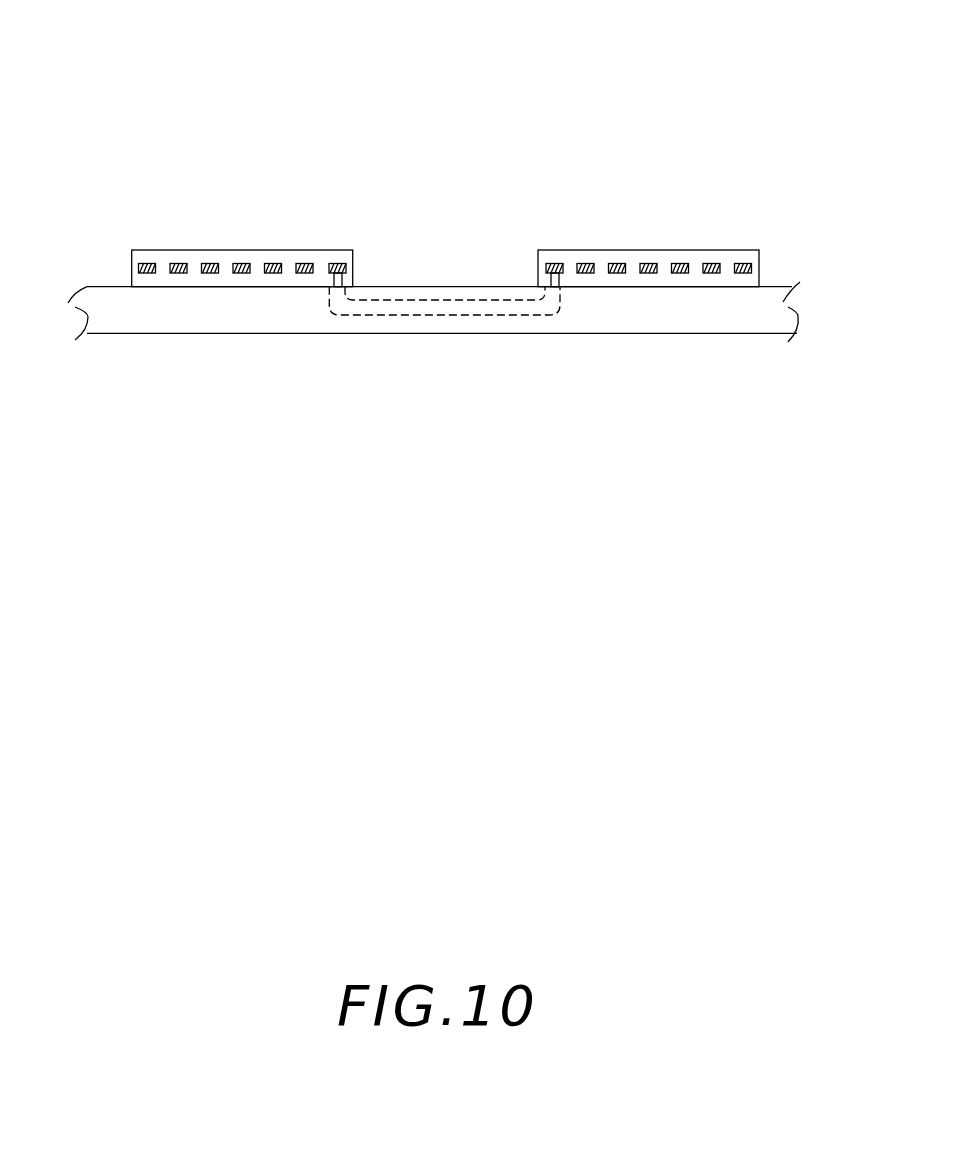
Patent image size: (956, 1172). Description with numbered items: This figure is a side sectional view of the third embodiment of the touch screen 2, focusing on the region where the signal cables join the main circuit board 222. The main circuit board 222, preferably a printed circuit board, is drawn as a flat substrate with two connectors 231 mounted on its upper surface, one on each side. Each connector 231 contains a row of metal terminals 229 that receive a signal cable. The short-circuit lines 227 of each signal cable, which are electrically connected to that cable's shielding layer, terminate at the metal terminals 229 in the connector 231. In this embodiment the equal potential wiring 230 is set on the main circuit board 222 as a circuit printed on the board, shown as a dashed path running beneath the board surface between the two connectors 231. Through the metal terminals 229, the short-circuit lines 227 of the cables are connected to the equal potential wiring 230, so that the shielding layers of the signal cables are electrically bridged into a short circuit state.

The touch screen 2 is at (425, 101).
The main circuit board 222 is at (658, 318).
The short-circuit lines 227 is at (337, 267).
The metal terminals 229 is at (337, 280).
The equal potential wiring 230 is at (457, 317).
The connector 231 is at (188, 250).